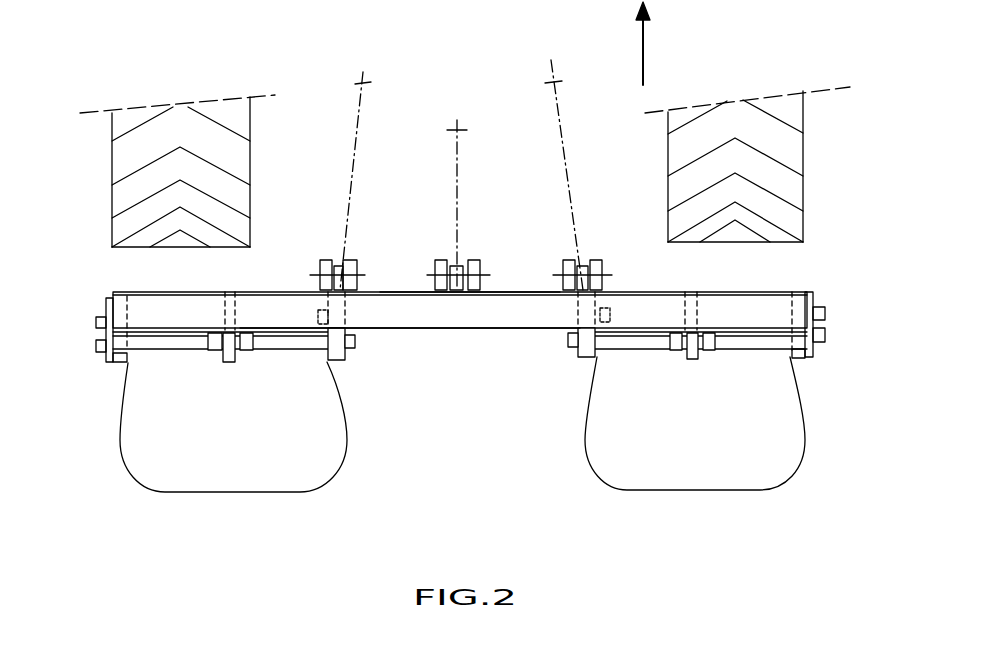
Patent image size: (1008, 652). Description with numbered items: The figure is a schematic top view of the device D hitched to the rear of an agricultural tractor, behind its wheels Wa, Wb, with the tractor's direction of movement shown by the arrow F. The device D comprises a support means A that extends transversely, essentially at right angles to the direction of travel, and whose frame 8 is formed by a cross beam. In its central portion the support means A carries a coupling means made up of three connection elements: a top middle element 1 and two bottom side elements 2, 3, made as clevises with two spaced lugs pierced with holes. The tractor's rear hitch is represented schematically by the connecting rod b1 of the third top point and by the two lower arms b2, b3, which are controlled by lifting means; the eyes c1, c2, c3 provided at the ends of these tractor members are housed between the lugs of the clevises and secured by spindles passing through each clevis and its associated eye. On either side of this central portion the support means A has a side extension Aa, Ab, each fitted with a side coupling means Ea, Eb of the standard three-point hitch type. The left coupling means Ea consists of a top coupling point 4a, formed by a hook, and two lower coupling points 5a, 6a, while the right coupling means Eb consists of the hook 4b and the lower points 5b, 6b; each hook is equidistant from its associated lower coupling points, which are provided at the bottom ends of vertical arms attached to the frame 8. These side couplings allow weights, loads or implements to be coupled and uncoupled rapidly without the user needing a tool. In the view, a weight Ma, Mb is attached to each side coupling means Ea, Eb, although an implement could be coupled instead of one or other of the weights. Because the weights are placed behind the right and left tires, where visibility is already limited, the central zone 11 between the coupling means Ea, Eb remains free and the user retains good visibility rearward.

The frame 8 is at (279, 310).
The support means A is at (398, 334).
The side extension Aa is at (145, 307).
The side extension Ab is at (768, 297).
The lower coupling point 5a is at (121, 362).
The lower coupling point 5b is at (800, 380).
The top coupling point 4a is at (232, 362).
The top coupling point 4b is at (690, 357).
The lower coupling point 6a is at (343, 352).
The lower coupling point 6b is at (578, 352).
The top middle connection element 1 is at (424, 260).
The bottom side connection element 2 is at (362, 259).
The bottom side connection element 3 is at (556, 260).
The eye c1 is at (462, 260).
The eye c2 is at (326, 260).
The eye c3 is at (594, 260).
The connecting rod b1 is at (457, 185).
The lower arm b2 is at (353, 150).
The lower arm b3 is at (560, 130).
The arrow F is at (645, 42).
The wheel Wa is at (118, 145).
The wheel Wb is at (783, 153).
The weight Ma is at (243, 457).
The weight Mb is at (707, 450).
The side coupling means Ea is at (191, 367).
The side coupling means Eb is at (804, 378).
The central zone 11 is at (462, 342).
The device D is at (492, 349).